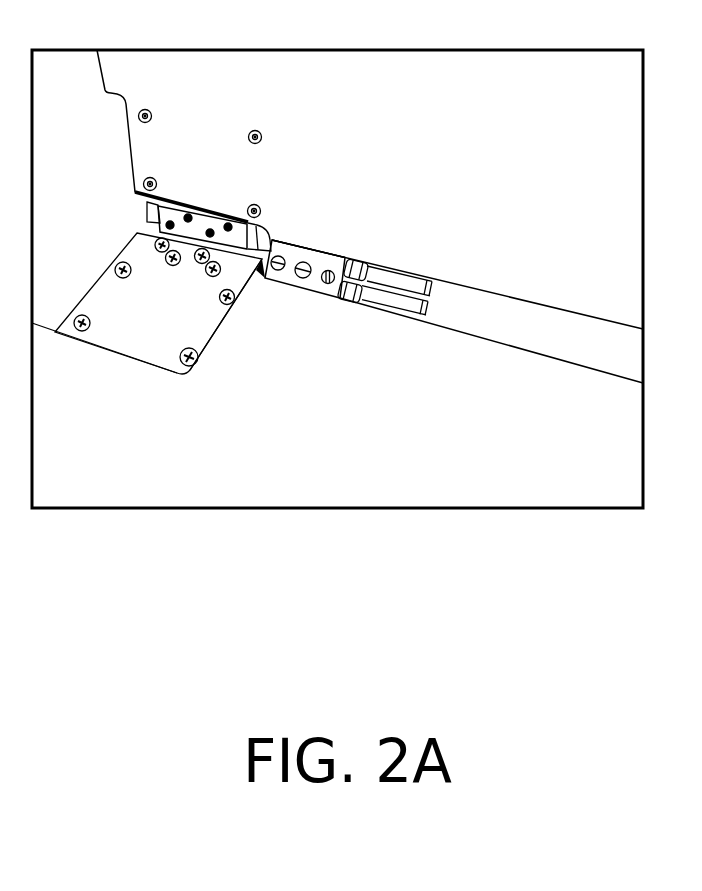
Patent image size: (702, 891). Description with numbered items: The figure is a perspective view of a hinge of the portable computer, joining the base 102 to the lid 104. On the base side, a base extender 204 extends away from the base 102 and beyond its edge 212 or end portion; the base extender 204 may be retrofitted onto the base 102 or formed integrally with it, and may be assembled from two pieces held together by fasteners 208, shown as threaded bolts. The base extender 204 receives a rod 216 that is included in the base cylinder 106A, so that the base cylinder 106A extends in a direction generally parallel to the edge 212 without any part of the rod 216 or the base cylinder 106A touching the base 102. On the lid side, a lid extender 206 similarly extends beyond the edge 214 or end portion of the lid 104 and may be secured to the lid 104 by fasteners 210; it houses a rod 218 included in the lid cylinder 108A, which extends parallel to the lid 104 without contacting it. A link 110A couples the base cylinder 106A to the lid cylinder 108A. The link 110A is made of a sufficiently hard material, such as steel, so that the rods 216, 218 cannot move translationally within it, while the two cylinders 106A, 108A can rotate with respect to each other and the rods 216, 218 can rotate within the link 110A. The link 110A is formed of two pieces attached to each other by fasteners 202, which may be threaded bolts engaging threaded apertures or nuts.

The base 102 is at (411, 445).
The lid 104 is at (494, 152).
The base cylinder 106A is at (369, 307).
The lid cylinder 108A is at (386, 264).
The link 110A is at (311, 247).
The fasteners 202 is at (314, 290).
The base extender 204 is at (103, 353).
The lid extender 206 is at (183, 206).
The fasteners 208 is at (237, 315).
The fasteners 210 is at (212, 211).
The edge 212 is at (507, 338).
The edge 214 is at (541, 313).
The rod 216 is at (344, 305).
The rod 218 is at (358, 259).